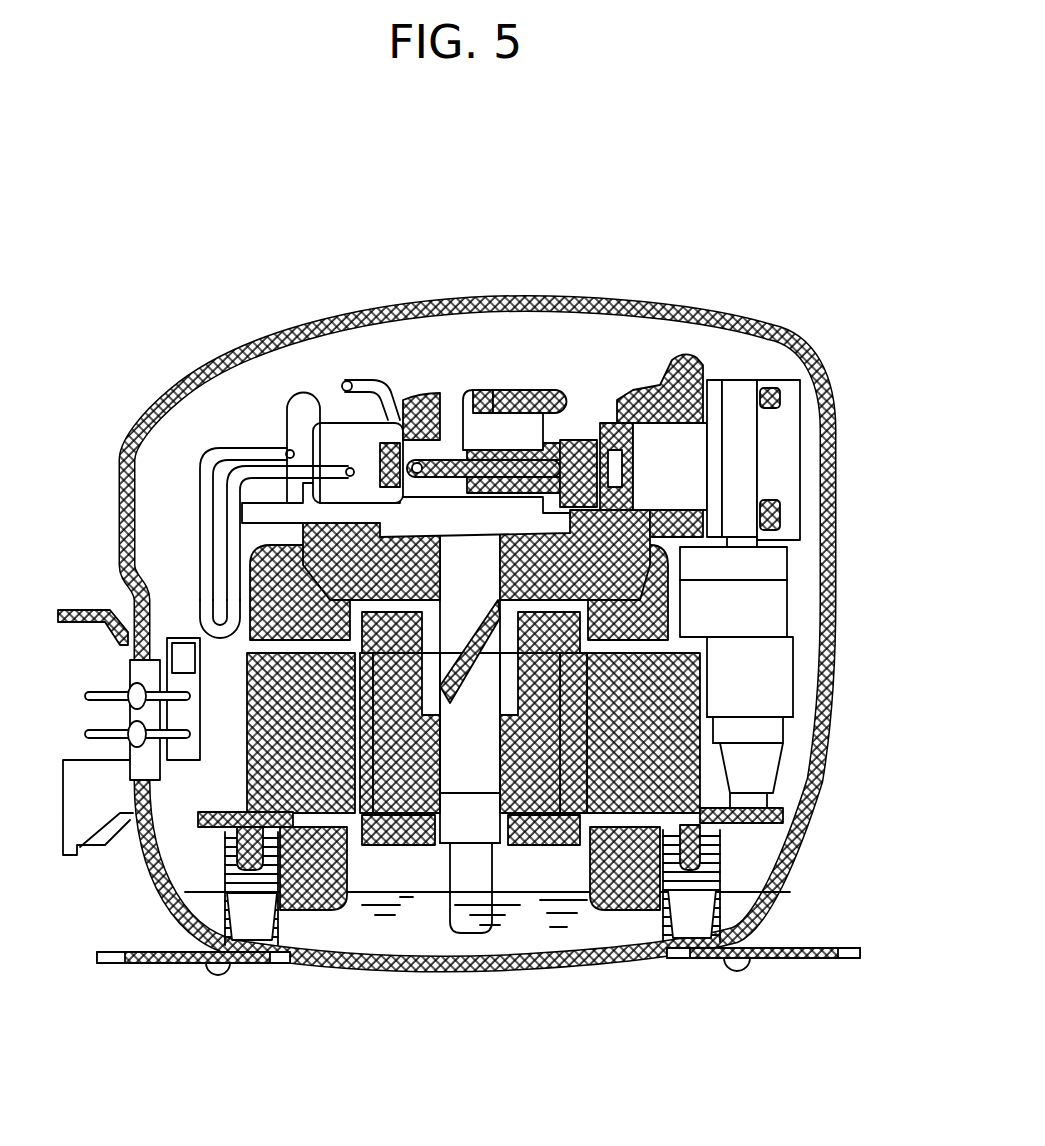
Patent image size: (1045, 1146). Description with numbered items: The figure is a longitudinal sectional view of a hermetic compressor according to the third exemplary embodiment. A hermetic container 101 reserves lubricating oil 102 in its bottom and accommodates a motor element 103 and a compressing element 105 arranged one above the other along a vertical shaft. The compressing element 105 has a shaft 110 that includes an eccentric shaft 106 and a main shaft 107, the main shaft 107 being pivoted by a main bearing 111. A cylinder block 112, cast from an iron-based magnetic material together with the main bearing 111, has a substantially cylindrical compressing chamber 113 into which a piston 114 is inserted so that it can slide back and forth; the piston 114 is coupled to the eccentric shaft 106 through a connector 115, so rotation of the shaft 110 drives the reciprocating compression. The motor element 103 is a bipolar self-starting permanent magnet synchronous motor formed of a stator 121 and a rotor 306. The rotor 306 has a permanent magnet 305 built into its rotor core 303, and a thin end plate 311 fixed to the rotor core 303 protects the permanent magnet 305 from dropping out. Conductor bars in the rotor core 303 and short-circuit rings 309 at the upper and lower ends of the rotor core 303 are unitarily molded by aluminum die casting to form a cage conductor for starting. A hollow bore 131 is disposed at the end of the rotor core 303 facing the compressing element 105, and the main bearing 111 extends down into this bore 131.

The hermetic container 101 is at (223, 368).
The lubricating oil 102 is at (360, 922).
The motor element 103 is at (300, 757).
The compressing element 105 is at (622, 403).
The eccentric shaft 106 is at (430, 440).
The main shaft 107 is at (490, 602).
The shaft 110 is at (487, 770).
The main bearing 111 is at (400, 570).
The cylinder block 112 is at (667, 417).
The compressing chamber 113 is at (688, 447).
The piston 114 is at (650, 483).
The connector 115 is at (522, 450).
The stator 121 is at (300, 673).
The hollow bore 131 is at (430, 670).
The rotor core 303 is at (540, 775).
The permanent magnet 305 is at (565, 735).
The rotor 306 is at (667, 685).
The short-circuit rings 309 is at (570, 638).
The thin end plate 311 is at (436, 790).